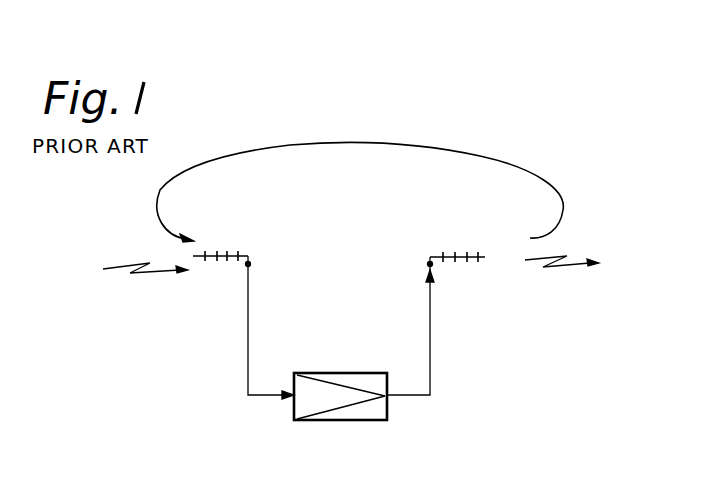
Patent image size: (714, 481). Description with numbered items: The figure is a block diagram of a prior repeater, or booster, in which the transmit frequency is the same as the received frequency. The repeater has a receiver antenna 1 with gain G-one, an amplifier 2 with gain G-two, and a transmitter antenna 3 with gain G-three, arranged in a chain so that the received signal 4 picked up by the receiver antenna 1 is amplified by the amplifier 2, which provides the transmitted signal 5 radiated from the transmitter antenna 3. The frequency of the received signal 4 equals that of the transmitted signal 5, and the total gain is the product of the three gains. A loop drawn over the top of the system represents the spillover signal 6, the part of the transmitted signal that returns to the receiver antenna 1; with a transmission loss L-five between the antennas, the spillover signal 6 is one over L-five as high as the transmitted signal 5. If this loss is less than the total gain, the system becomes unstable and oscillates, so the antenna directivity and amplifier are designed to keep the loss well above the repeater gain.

The receiver antenna 1 is at (228, 250).
The amplifier 2 is at (390, 409).
The transmitter antenna 3 is at (472, 252).
The received signal 4 is at (145, 283).
The transmitted signal 5 is at (562, 250).
The spillover signal 6 is at (172, 222).